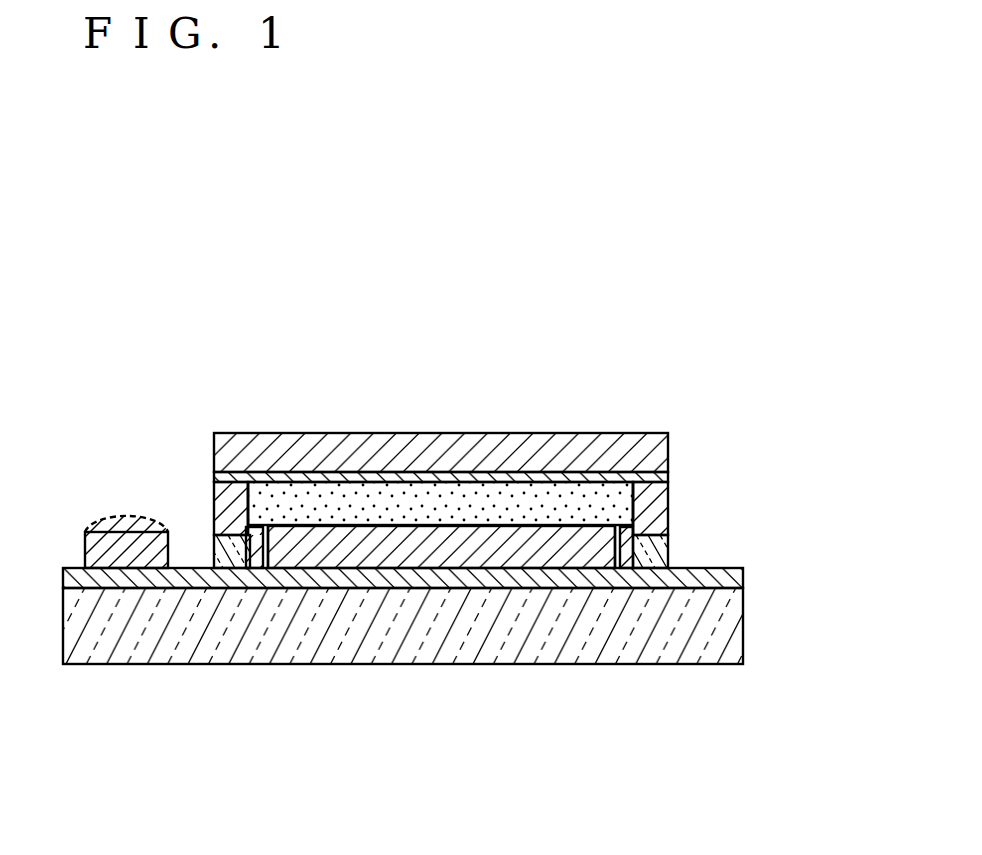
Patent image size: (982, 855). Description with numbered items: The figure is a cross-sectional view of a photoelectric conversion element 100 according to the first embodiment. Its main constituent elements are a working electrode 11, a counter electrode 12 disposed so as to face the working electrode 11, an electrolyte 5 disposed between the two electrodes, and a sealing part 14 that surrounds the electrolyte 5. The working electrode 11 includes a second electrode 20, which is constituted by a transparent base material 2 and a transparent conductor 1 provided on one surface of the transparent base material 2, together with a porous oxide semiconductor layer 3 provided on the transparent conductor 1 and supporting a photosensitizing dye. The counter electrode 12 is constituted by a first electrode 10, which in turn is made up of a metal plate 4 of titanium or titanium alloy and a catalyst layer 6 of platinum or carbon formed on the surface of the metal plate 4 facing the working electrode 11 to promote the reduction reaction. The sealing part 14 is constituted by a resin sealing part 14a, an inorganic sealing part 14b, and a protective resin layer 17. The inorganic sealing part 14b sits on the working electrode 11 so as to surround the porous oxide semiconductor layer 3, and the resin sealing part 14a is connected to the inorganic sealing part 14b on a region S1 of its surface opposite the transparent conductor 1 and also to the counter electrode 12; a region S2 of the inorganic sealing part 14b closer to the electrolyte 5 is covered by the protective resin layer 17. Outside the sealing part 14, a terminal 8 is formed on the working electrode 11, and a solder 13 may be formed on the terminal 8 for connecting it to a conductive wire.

The photoelectric conversion element 100 is at (760, 377).
The transparent conductor 1 is at (365, 626).
The transparent base material 2 is at (305, 580).
The second electrode 20 is at (403, 689).
The porous oxide semiconductor layer 3 is at (387, 553).
The working electrode 11 is at (403, 687).
The electrolyte 5 is at (516, 503).
The metal plate 4 is at (596, 456).
The catalyst layer 6 is at (564, 480).
The counter electrode 12 is at (441, 385).
The first electrode 10 is at (441, 385).
The sealing part 14 is at (422, 655).
The resin sealing part 14a is at (216, 537).
The inorganic sealing part 14b is at (250, 538).
The protective resin layer 17 is at (240, 562).
The terminal 8 is at (118, 552).
The solder 13 is at (101, 516).
The region S1 is at (236, 530).
The region S2 is at (270, 541).